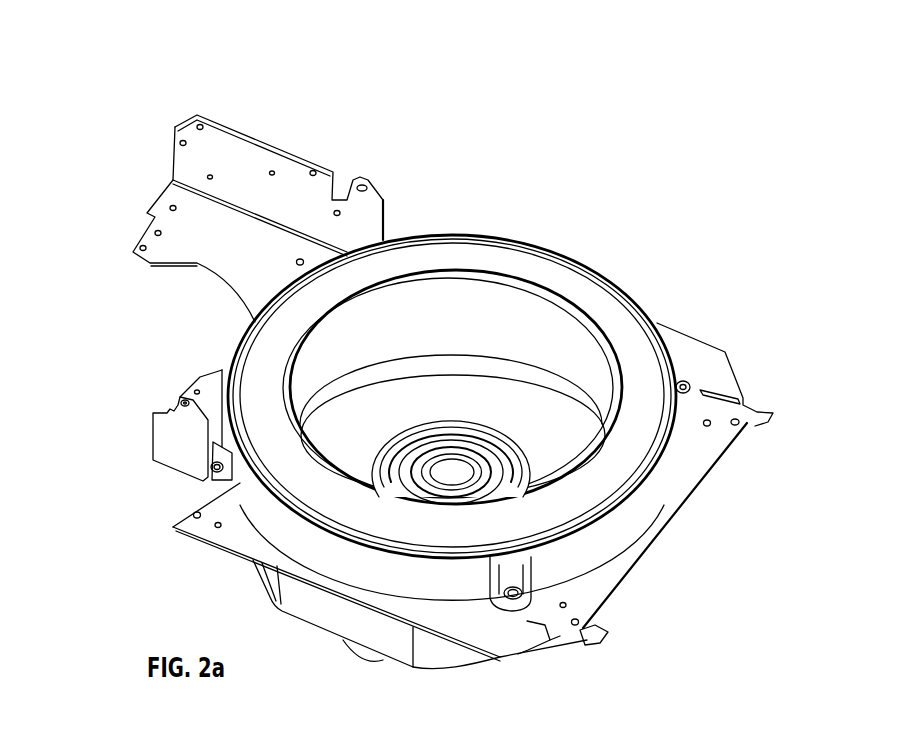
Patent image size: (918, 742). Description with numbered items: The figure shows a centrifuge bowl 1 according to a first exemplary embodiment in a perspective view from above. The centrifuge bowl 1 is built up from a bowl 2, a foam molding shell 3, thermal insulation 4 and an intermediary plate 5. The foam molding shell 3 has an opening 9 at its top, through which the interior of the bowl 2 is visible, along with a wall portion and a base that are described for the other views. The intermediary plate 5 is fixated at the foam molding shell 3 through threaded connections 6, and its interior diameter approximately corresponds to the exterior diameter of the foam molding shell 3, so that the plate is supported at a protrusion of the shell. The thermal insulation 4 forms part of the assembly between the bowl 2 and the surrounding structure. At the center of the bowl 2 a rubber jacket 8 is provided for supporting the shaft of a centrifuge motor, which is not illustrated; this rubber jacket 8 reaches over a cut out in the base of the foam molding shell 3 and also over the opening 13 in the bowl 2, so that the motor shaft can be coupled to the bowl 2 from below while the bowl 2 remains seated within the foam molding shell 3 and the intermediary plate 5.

The centrifuge bowl 1 is at (528, 193).
The bowl 2 is at (463, 310).
The foam molding shell 3 is at (650, 483).
The thermal insulation 4 is at (583, 300).
The intermediary plate 5 is at (607, 572).
The threaded connections 6 is at (198, 477).
The rubber jacket 8 is at (422, 458).
The opening 9 is at (237, 333).
The opening 13 is at (453, 480).